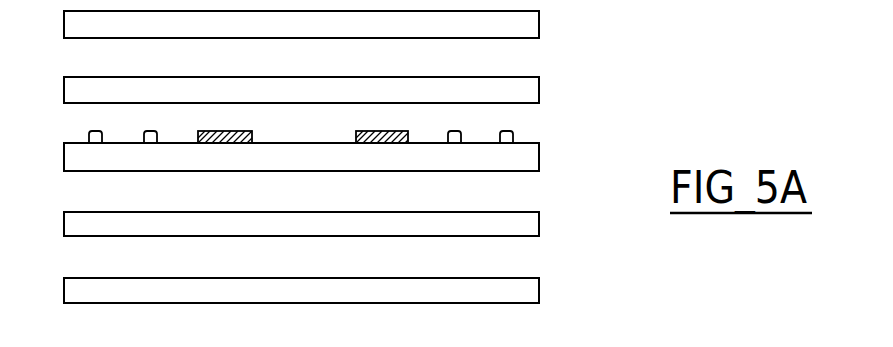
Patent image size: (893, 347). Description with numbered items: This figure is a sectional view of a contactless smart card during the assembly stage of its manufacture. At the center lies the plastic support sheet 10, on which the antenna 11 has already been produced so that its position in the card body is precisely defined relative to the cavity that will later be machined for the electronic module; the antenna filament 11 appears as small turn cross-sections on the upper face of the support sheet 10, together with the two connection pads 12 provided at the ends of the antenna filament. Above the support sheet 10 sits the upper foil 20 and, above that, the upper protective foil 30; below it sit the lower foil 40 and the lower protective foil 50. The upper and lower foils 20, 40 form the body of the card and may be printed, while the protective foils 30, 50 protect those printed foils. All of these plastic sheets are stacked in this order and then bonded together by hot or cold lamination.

The support sheet 10 is at (540, 156).
The antenna 11 is at (94, 130).
The connection pads 12 is at (230, 131).
The upper foil 20 is at (540, 88).
The upper protective foil 30 is at (540, 22).
The lower foil 40 is at (540, 224).
The lower protective foil 50 is at (540, 290).